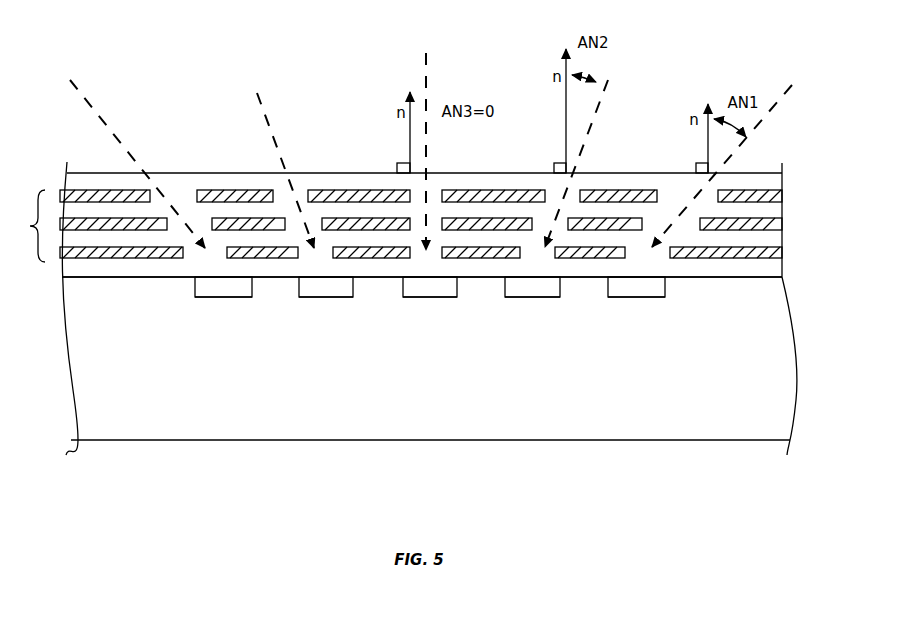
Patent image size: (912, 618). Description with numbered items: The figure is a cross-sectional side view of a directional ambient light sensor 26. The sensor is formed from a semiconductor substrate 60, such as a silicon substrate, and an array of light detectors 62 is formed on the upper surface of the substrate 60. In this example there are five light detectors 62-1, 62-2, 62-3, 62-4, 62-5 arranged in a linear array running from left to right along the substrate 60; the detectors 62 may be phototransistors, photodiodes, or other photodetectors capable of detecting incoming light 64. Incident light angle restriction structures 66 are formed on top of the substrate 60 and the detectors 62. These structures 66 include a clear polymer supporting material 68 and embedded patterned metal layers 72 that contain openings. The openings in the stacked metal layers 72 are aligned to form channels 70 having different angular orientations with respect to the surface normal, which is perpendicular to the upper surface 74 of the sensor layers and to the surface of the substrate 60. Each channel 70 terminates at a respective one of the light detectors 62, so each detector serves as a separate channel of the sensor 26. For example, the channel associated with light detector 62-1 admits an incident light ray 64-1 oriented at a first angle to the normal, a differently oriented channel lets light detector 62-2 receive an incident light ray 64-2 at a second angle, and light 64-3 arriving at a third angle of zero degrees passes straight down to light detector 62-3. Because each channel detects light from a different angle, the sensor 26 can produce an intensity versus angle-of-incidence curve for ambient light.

The ambient light sensor 26 is at (181, 466).
The substrate 60 is at (331, 427).
The light detectors 62 is at (181, 324).
The light detector 62-1 is at (635, 290).
The light detector 62-2 is at (532, 290).
The light detector 62-3 is at (428, 290).
The light detector 62-4 is at (324, 290).
The light detector 62-5 is at (220, 290).
The incoming light 64 is at (92, 112).
The incident light ray 64-1 is at (768, 119).
The incident light ray 64-2 is at (600, 124).
The light 64-3 is at (428, 60).
The incident light angle restriction structures 66 is at (26, 226).
The supporting material 68 is at (70, 268).
The channels 70 is at (179, 188).
The patterned metal layers 72 is at (100, 218).
The upper surface 74 is at (630, 172).